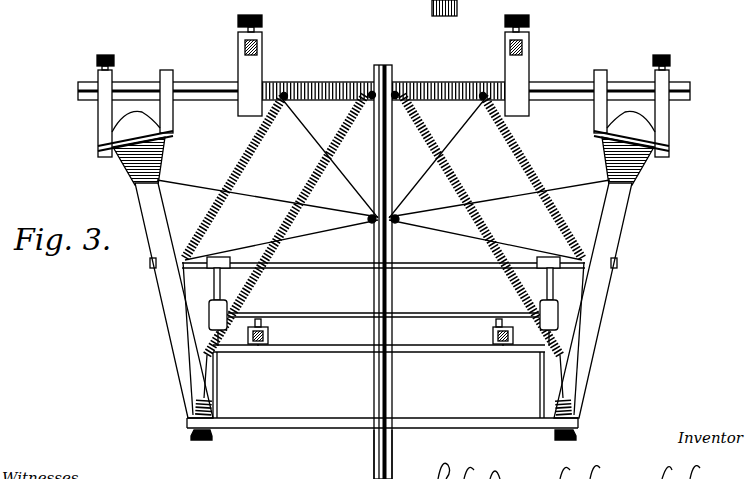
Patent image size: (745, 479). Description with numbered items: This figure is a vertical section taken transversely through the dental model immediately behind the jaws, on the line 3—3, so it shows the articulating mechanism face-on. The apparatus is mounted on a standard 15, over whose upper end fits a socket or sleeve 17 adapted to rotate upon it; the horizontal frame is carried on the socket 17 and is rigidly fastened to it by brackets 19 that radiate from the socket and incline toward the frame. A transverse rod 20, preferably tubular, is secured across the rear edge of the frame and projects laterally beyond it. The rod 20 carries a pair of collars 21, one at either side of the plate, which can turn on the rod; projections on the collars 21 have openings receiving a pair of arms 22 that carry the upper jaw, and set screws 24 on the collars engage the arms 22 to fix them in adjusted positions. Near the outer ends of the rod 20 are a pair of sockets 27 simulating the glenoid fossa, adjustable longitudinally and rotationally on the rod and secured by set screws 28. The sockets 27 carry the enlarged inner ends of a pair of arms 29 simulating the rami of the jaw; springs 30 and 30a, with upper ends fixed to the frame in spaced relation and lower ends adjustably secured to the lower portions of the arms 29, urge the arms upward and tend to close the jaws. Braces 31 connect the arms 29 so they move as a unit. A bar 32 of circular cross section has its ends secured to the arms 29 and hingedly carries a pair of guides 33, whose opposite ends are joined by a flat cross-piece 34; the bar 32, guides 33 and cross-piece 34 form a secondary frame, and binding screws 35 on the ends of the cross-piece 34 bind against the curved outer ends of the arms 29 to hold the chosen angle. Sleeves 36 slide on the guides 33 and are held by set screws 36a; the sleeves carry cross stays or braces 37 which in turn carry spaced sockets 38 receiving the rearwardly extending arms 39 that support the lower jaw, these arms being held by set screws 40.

The knob fragment 3 is at (450, 16).
The standard 15 is at (393, 467).
The socket or sleeve 17 is at (393, 166).
The brackets 19 is at (446, 150).
The transverse rod 20 is at (210, 80).
The collars 21 is at (553, 68).
The arms 22 is at (547, 47).
The set screws 24 is at (547, 22).
The sockets 27 is at (668, 121).
The set screws 28 is at (672, 63).
The arms 29 is at (623, 206).
The springs 30 is at (525, 162).
The springs 30a is at (478, 214).
The braces 31 is at (568, 186).
The bar 32 is at (424, 265).
The guides 33 is at (541, 376).
The cross-piece 34 is at (510, 418).
The binding screws 35 is at (572, 439).
The sleeves 36 is at (549, 323).
The set screws 36a is at (548, 292).
The cross stays or braces 37 is at (408, 347).
The sockets 38 is at (503, 346).
The arms 39 is at (494, 342).
The set screws 40 is at (497, 326).